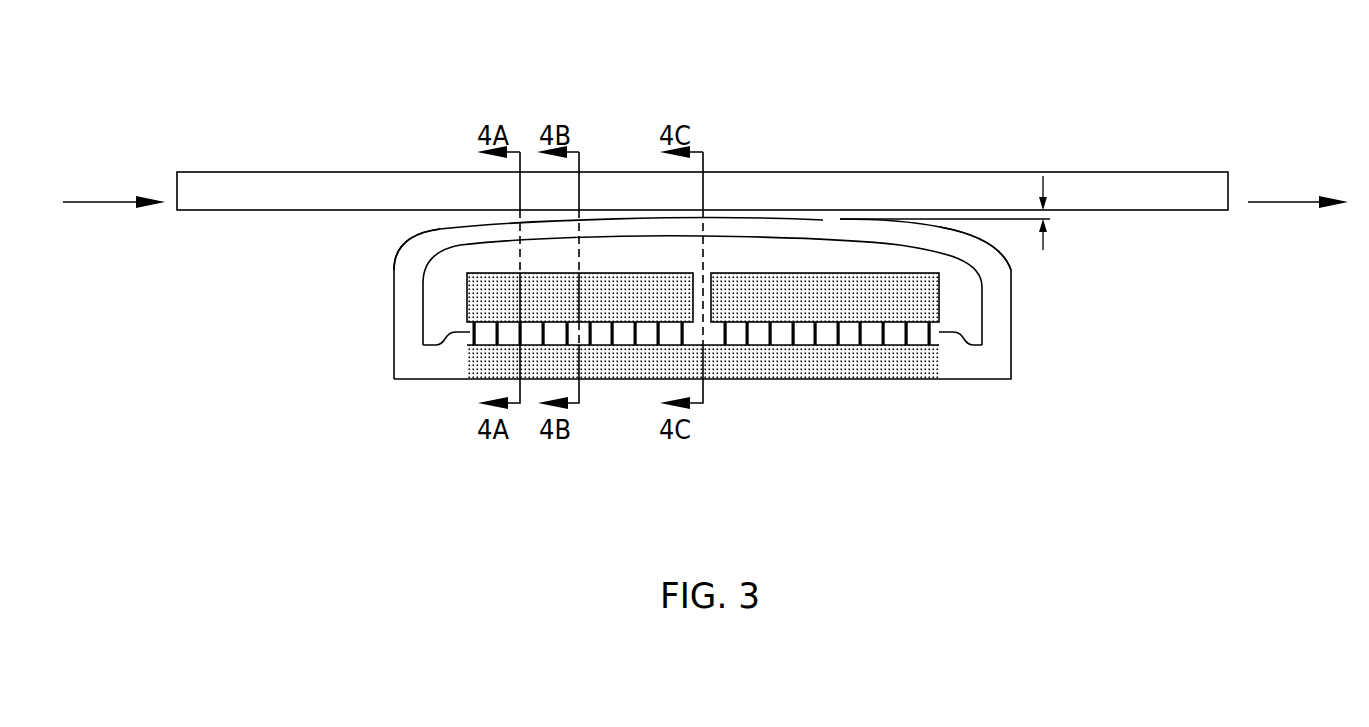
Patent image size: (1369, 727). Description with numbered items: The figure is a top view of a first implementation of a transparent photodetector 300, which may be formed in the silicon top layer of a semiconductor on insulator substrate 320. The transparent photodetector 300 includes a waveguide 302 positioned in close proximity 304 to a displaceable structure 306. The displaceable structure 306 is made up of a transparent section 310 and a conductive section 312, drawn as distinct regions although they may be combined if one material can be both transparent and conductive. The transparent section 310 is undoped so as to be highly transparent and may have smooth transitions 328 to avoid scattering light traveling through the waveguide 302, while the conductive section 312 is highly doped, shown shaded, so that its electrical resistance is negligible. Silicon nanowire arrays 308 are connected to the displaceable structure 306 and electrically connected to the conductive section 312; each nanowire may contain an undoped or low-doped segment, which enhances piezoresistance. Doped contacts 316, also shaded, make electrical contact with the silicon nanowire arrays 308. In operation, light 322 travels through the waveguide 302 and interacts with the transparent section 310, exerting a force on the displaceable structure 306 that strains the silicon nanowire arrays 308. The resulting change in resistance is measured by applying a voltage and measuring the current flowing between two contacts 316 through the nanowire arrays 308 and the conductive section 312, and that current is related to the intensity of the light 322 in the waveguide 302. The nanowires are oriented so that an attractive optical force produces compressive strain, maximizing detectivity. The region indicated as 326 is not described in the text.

The transparent photodetector 300 is at (278, 76).
The waveguide 302 is at (1098, 198).
The close proximity 304 is at (1070, 214).
The displaceable structure 306 is at (393, 308).
The silicon nanowire arrays 308 is at (433, 343).
The transparent section 310 is at (823, 231).
The conductive section 312 is at (465, 420).
The contacts 316 is at (776, 285).
The semiconductor on insulator substrate 320 is at (228, 488).
The light 322 is at (107, 202).
The cavity between magnet and housing 326 is at (980, 297).
The smooth transitions 328 is at (430, 242).